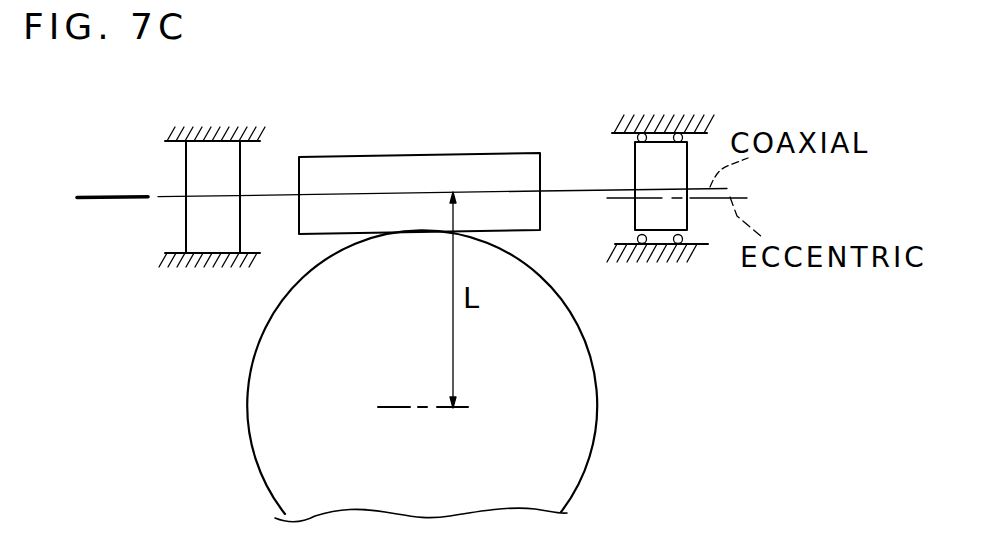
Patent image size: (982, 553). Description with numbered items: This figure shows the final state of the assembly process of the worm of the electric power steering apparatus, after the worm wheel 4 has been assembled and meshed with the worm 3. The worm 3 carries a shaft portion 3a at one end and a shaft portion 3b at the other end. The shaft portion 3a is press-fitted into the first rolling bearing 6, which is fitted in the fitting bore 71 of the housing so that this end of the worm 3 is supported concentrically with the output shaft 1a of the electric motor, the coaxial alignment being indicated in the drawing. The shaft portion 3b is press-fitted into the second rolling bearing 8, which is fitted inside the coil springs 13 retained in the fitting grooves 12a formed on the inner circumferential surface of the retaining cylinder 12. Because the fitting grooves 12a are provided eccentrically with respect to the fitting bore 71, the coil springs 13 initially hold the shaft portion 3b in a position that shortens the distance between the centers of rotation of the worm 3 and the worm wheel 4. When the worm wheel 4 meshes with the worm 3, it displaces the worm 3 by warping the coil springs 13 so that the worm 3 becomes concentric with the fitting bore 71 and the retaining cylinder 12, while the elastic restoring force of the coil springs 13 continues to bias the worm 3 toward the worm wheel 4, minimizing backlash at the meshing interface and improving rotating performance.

The output shaft 1a is at (110, 202).
The shaft portion 3a is at (172, 197).
The shaft portion 3b is at (587, 188).
The worm 3 is at (405, 162).
The worm wheel 4 is at (250, 388).
The first rolling bearing 6 is at (240, 165).
The fitting bore 71 is at (172, 253).
The second rolling bearing 8 is at (637, 213).
The retaining cylinder 12 is at (649, 274).
The fitting groove 12a is at (624, 244).
The coil spring 13 is at (660, 247).